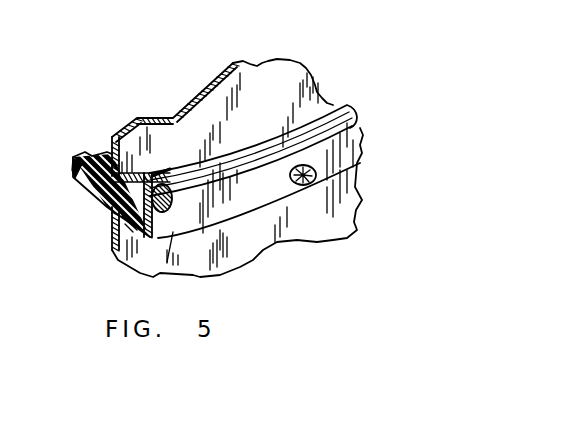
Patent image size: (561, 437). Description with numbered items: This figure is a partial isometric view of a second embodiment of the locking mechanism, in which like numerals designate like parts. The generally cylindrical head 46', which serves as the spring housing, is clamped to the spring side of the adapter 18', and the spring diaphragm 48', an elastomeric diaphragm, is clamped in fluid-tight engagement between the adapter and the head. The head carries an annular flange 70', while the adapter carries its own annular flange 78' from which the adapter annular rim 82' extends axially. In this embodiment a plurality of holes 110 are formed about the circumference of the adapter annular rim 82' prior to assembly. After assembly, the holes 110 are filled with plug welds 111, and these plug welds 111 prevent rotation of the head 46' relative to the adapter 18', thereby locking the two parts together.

The head 46' is at (272, 94).
The spring diaphragm 48' is at (120, 196).
The annular flange 70' is at (155, 161).
The annular flange 78' is at (259, 232).
The adapter annular rim 82' is at (306, 142).
The plug welds 111 is at (352, 145).
The holes 110 is at (305, 186).
The adapter 18' is at (281, 200).